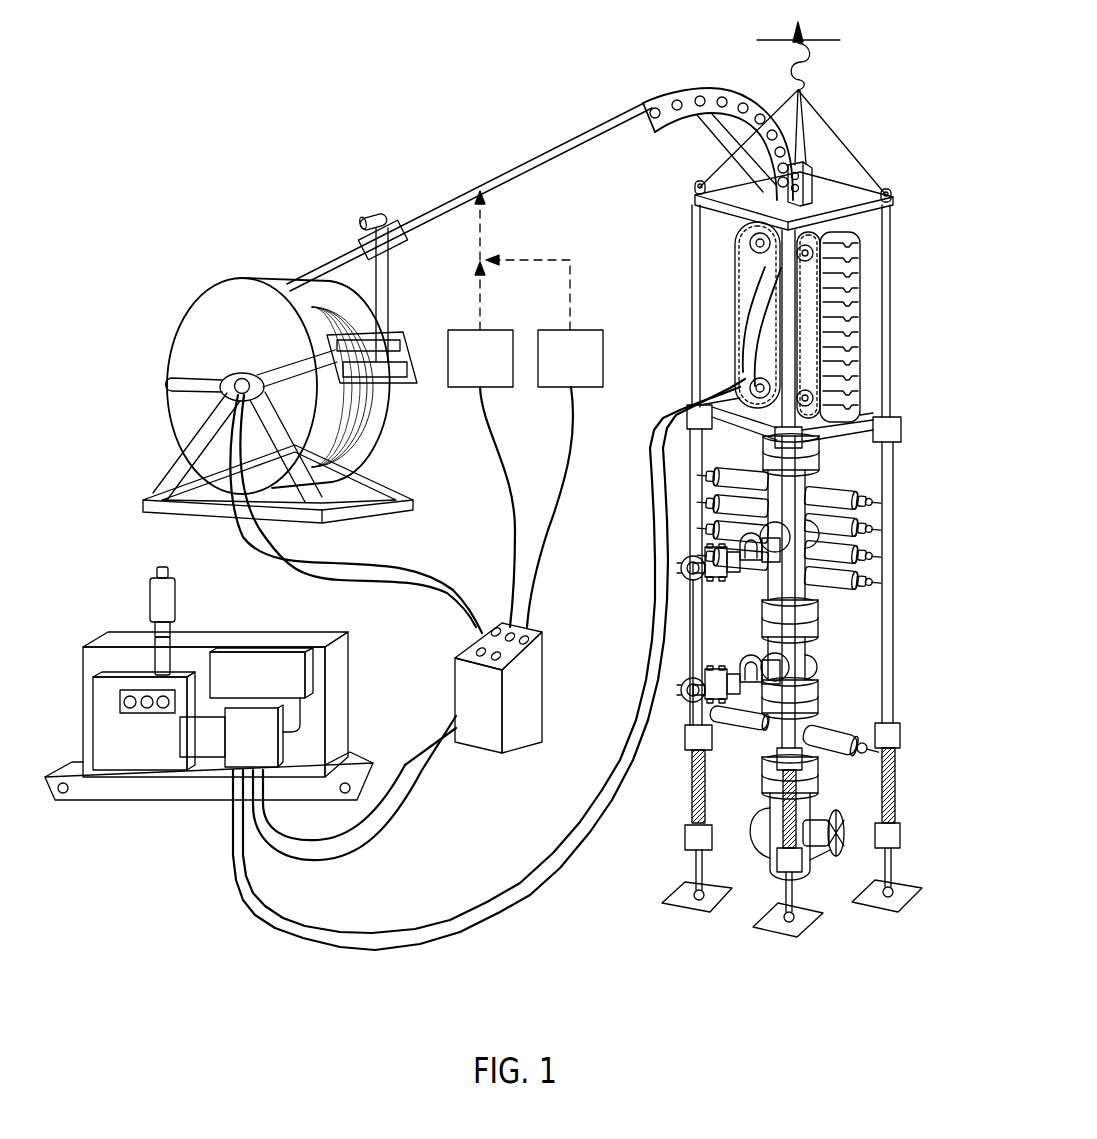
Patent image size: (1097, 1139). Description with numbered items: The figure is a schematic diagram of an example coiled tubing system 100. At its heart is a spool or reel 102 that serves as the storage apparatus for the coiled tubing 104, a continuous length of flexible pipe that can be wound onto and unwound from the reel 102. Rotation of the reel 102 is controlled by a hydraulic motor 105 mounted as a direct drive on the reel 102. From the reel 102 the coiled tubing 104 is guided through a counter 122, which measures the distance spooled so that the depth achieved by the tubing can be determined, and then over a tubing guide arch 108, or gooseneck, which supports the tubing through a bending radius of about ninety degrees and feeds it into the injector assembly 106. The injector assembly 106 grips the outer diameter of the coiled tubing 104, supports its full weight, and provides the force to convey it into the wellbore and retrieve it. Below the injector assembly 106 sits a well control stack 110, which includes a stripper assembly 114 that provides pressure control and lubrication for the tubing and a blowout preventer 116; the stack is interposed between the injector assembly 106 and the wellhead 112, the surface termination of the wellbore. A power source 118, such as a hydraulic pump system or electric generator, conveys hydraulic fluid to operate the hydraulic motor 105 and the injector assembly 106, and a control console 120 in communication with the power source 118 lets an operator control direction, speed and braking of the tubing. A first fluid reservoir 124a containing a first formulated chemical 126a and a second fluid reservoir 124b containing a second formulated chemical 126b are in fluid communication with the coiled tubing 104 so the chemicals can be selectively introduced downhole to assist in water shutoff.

The coiled tubing system 100 is at (137, 140).
The reel 102 is at (165, 342).
The coiled tubing 104 is at (548, 152).
The hydraulic motor 105 is at (226, 392).
The injector assembly 106 is at (713, 283).
The tubing guide arch 108 is at (712, 92).
The well control stack 110 is at (912, 527).
The wellhead 112 is at (748, 827).
The stripper assembly 114 is at (828, 465).
The blowout preventer 116 is at (837, 604).
The power source 118 is at (82, 636).
The control console 120 is at (550, 642).
The counter 122 is at (383, 228).
The first fluid reservoir 124a is at (445, 329).
The second fluid reservoir 124b is at (605, 328).
The first formulated chemical 126a is at (480, 358).
The second formulated chemical 126b is at (570, 358).